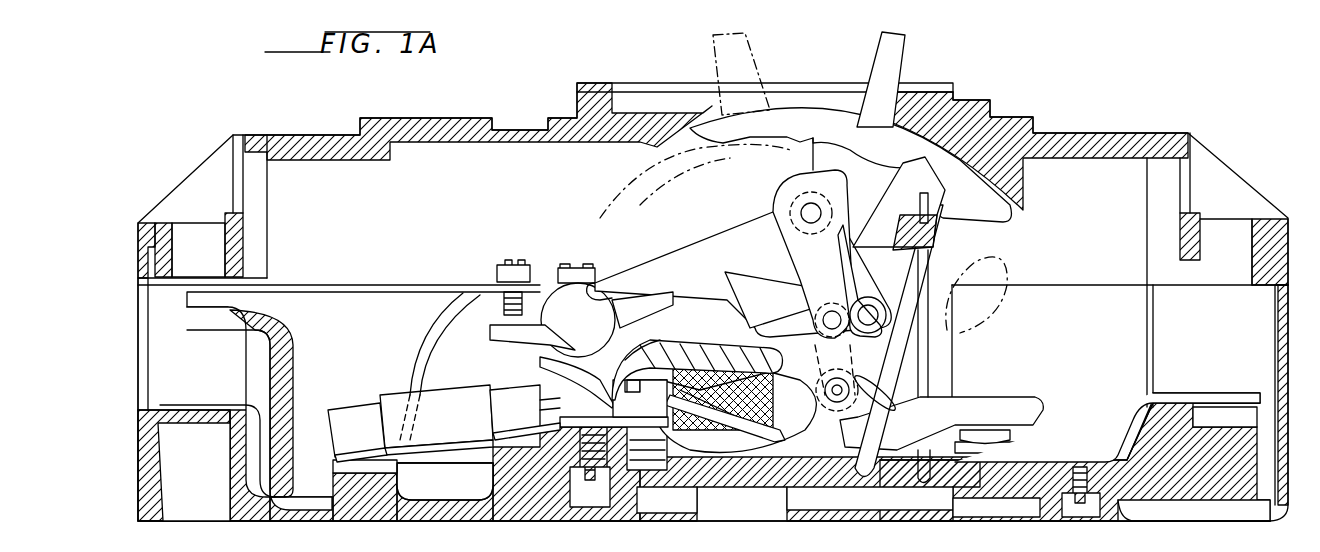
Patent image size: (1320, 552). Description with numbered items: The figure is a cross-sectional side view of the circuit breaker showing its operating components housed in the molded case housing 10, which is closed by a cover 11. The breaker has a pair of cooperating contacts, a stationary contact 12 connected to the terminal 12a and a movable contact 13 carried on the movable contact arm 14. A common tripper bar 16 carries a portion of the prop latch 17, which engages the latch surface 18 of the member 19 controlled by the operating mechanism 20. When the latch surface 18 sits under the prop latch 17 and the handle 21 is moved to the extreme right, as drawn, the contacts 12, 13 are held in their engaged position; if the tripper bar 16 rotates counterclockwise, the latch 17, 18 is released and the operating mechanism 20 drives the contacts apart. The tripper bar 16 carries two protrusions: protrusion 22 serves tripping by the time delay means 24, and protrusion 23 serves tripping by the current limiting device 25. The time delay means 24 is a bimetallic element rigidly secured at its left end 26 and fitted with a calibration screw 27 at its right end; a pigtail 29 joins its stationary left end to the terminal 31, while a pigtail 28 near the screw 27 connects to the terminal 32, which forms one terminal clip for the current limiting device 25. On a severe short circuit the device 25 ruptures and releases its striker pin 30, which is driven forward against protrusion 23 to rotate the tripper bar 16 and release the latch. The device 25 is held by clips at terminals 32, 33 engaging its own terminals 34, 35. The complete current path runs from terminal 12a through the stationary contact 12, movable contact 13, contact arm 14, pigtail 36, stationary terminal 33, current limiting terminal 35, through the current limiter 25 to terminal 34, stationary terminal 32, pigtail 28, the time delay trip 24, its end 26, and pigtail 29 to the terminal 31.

The molded case housing 10 is at (1120, 117).
The cover 11 is at (505, 120).
The stationary contact 12 is at (1000, 440).
The terminal 12a is at (1213, 392).
The movable contact 13 is at (990, 430).
The movable contact arm 14 is at (985, 405).
The common tripper bar 16 is at (590, 326).
The prop latch 17 is at (577, 268).
The latch surface 18 is at (600, 282).
The member 19 is at (690, 252).
The operating mechanism 20 is at (770, 192).
The handle 21 is at (885, 60).
The protrusion 22 is at (508, 335).
The protrusion 23 is at (585, 378).
The time delay means 24 is at (368, 288).
The current limiting device 25 is at (452, 382).
The left end 26 is at (203, 276).
The calibration screw 27 is at (520, 264).
The pigtail 28 is at (425, 335).
The pigtail 29 is at (295, 350).
The striker pin 30 is at (540, 402).
The terminal 31 is at (223, 400).
The terminal 32 is at (335, 467).
The stationary terminal 33 is at (505, 447).
The current limiting terminal 34 is at (357, 410).
The current limiting terminal 35 is at (512, 400).
The pigtail 36 is at (680, 345).